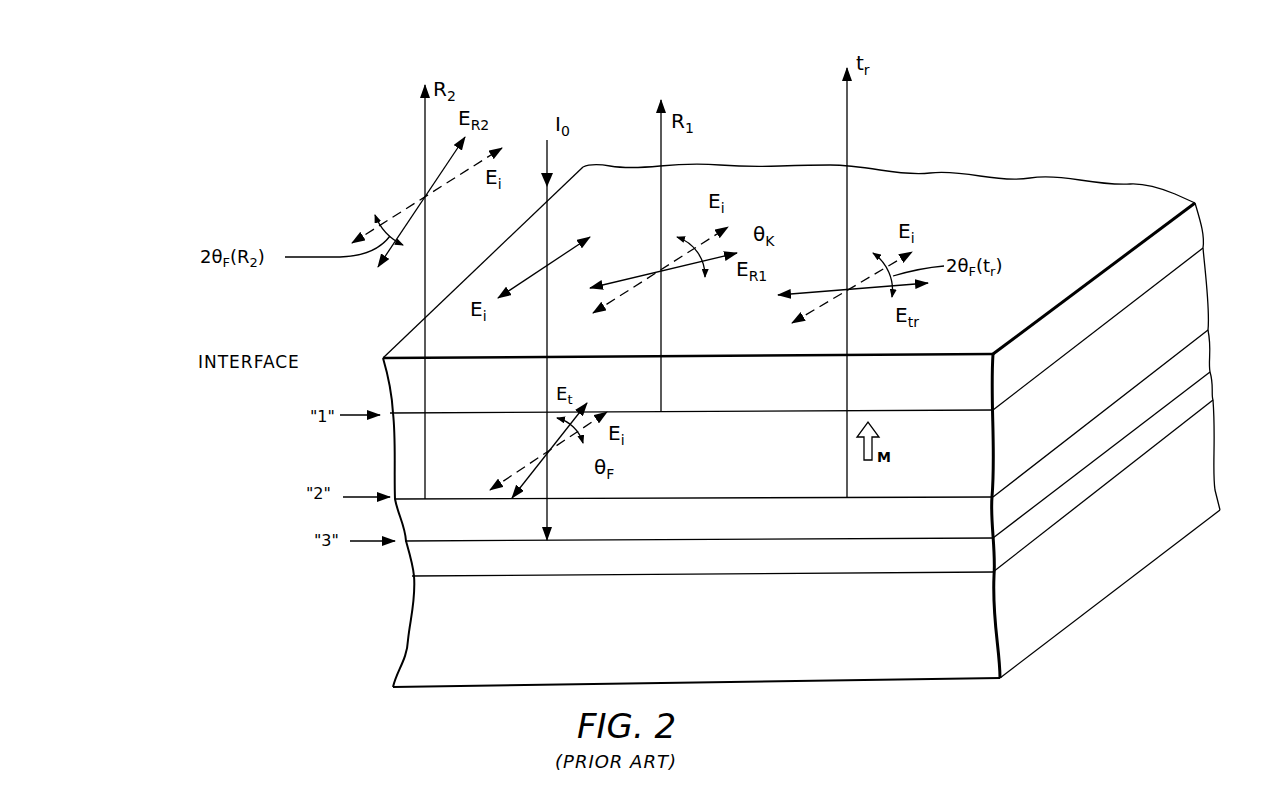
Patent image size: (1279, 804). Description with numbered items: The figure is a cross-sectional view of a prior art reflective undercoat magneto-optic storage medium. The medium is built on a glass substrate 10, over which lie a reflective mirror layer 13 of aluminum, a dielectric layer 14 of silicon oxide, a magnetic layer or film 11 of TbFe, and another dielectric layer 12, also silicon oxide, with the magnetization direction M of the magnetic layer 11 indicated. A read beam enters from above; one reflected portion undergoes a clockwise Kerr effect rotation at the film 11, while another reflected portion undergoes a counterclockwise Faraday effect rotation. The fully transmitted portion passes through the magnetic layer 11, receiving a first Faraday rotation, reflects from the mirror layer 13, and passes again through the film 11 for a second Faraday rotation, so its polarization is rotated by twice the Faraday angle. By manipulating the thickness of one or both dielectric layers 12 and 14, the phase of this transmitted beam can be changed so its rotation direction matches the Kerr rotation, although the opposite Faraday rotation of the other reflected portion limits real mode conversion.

The substrate 10 is at (1194, 451).
The magnetic layer 11 is at (1188, 311).
The dielectric layer 12 is at (1184, 242).
The reflective mirror layer 13 is at (1200, 403).
The dielectric layer 14 is at (1193, 364).